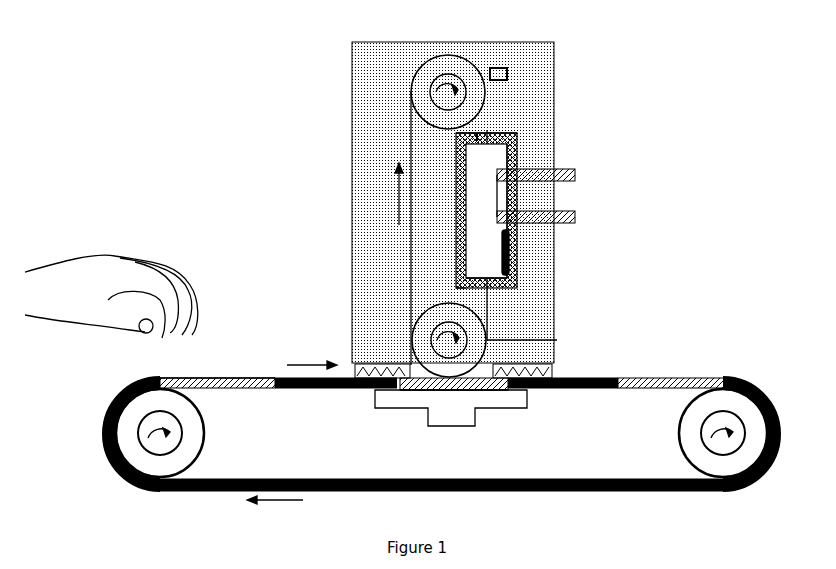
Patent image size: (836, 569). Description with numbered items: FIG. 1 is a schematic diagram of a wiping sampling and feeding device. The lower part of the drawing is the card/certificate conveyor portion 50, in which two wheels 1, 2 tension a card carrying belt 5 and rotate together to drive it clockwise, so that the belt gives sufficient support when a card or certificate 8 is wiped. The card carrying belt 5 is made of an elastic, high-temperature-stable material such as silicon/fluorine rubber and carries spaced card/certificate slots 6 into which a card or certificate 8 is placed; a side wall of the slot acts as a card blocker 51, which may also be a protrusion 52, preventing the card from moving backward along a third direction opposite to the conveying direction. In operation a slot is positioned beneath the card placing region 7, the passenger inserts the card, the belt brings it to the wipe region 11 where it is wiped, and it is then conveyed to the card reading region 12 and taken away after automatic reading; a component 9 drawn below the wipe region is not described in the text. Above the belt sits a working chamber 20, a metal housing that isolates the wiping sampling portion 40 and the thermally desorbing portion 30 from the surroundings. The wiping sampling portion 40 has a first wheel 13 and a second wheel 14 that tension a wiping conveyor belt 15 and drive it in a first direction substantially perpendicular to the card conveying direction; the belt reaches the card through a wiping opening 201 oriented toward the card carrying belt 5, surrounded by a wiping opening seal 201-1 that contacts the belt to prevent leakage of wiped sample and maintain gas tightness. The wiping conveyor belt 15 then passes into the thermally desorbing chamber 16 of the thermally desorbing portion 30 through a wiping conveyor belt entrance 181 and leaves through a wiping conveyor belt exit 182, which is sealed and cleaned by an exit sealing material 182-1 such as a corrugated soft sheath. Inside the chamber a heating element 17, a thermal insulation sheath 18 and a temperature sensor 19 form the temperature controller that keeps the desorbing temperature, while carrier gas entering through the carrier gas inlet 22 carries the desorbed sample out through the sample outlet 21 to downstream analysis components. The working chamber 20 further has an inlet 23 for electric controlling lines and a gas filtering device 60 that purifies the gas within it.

The wheel 1 is at (148, 430).
The wheel 2 is at (742, 422).
The card carrying belt 5 is at (288, 477).
The card/certificate slot 6 is at (732, 375).
The card placing region 7 is at (203, 377).
The card or certificate 8 is at (213, 377).
The base 9 is at (435, 402).
The wipe region 11 is at (480, 374).
The card reading region 12 is at (677, 367).
The first wheel 13 is at (413, 335).
The second wheel 14 is at (412, 90).
The wiping conveyor belt 15 is at (409, 140).
The thermally desorbing chamber 16 is at (517, 133).
The heating element 17 is at (517, 273).
The thermal insulation sheath 18 is at (510, 153).
The temperature sensor 19 is at (515, 252).
The working chamber 20 is at (553, 306).
The sample outlet 21 is at (573, 223).
The carrier gas inlet 22 is at (560, 172).
The inlet for electric controlling lines 23 is at (557, 340).
The thermally desorbing portion 30 is at (516, 195).
The wiping sampling portion 40 is at (411, 98).
The card/certificate conveyor portion 50 is at (114, 393).
The card blocker 51 is at (182, 375).
The protrusion 52 is at (623, 370).
The gas filtering device 60 is at (494, 67).
The wiping conveyor belt entrance 181 is at (457, 287).
The wiping conveyor belt exit 182 is at (487, 133).
The wiping conveyor belt exit sealing material 182-1 is at (480, 132).
The wiping opening 201 is at (407, 363).
The wiping opening seal 201-1 is at (553, 390).